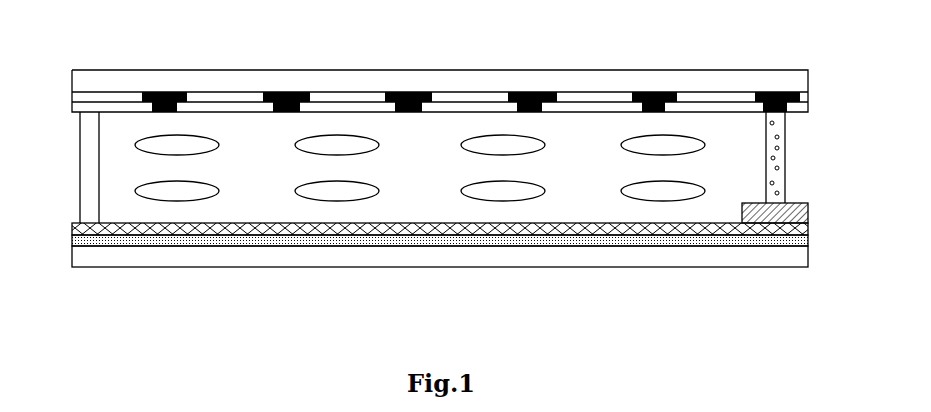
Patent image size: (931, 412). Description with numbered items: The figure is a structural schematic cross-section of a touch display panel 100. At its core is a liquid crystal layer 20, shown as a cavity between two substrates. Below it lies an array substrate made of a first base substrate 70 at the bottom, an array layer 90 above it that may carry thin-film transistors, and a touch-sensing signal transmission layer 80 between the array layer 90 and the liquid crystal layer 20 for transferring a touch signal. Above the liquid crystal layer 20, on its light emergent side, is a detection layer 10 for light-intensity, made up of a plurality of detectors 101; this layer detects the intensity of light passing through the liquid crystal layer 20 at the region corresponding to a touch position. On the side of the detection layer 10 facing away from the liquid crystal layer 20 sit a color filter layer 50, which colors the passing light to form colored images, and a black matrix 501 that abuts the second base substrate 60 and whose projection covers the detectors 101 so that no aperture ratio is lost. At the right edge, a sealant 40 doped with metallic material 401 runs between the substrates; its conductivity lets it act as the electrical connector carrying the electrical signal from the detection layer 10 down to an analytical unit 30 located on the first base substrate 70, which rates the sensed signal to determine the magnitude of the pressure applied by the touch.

The touch display panel 100 is at (378, 278).
The detection layer for light-intensity 10 is at (72, 108).
The detectors 101 is at (152, 112).
The liquid crystal layer 20 is at (117, 180).
The analytical unit 30 is at (808, 205).
The sealant 40 is at (785, 138).
The metallic material 401 is at (777, 157).
The color filter layer 50 is at (72, 100).
The black matrix 501 is at (279, 95).
The second base substrate 60 is at (632, 82).
The first base substrate 70 is at (713, 253).
The touch-sensing signal transmission layer 80 is at (808, 223).
The array layer 90 is at (808, 242).